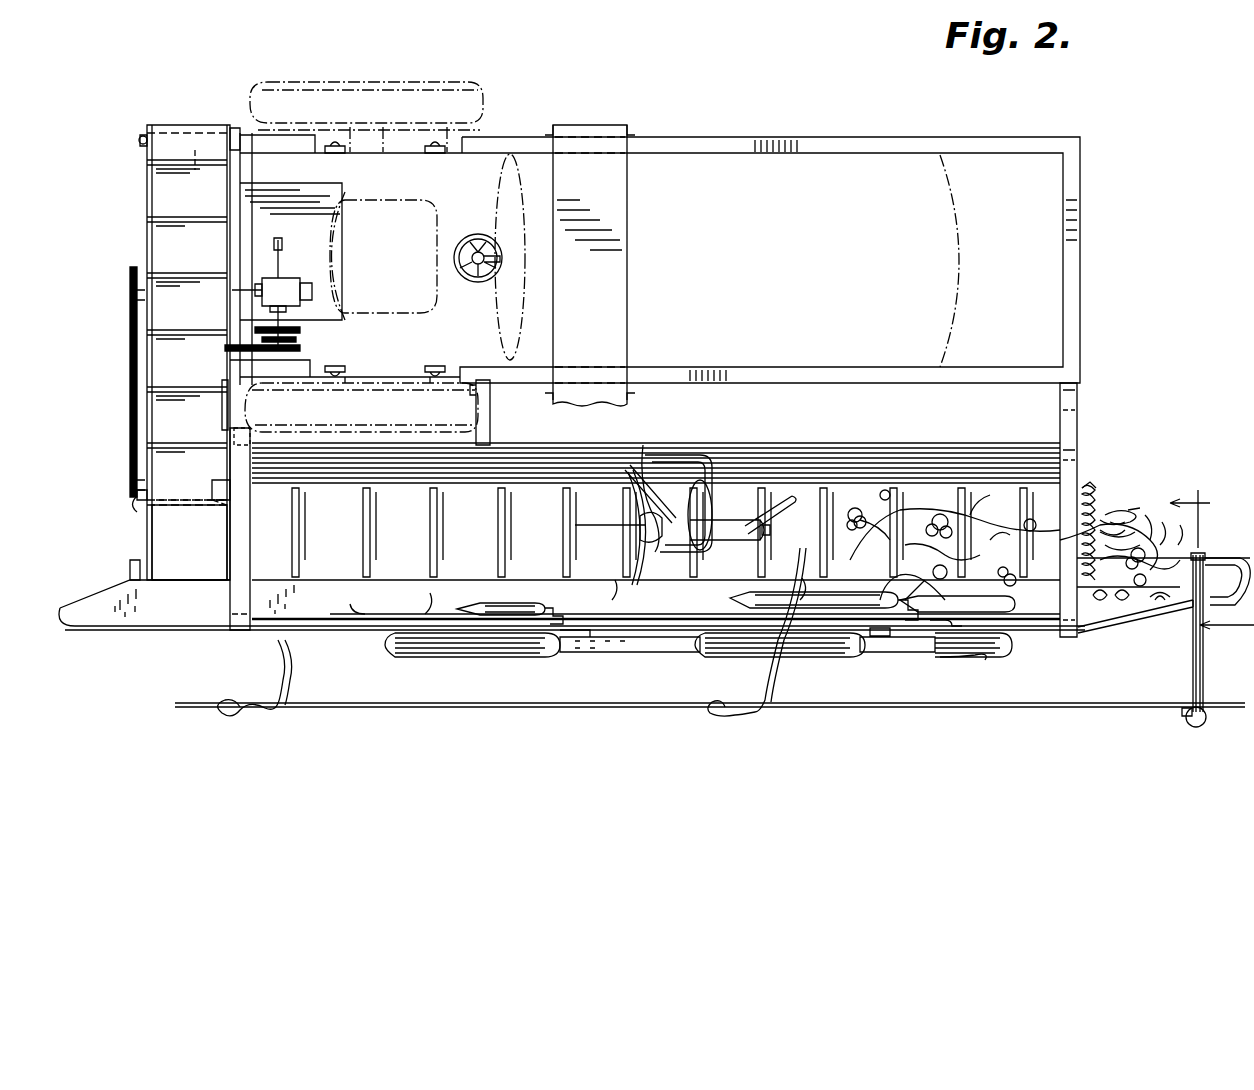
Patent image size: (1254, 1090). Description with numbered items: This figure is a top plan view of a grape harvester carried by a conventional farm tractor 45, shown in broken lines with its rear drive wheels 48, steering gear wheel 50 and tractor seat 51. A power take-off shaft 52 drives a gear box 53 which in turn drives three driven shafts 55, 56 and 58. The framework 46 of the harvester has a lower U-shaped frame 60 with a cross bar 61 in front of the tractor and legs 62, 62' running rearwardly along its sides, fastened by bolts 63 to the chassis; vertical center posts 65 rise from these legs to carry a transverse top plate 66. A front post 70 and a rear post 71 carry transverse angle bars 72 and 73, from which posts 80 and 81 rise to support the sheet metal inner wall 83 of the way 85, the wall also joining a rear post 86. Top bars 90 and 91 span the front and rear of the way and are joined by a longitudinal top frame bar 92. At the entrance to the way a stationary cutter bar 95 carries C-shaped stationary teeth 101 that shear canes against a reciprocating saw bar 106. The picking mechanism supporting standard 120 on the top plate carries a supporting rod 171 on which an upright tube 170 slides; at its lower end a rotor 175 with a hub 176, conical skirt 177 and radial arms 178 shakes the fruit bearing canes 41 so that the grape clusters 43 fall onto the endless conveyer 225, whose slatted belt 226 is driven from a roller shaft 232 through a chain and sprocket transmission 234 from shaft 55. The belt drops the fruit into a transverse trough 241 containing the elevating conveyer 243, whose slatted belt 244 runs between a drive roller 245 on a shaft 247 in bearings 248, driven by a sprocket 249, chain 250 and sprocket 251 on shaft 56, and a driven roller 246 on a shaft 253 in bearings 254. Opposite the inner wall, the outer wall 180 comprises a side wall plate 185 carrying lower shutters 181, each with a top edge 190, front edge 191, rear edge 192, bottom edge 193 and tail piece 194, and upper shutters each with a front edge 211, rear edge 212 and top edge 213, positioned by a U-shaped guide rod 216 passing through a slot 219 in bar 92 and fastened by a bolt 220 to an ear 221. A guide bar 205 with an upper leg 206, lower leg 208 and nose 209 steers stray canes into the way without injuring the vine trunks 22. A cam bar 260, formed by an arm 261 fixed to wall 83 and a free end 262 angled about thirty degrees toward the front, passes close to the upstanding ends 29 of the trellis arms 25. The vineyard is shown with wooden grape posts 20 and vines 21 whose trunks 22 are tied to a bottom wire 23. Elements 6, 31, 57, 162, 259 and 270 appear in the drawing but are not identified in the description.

The section line 6 is at (1212, 559).
The wooden grape posts 20 is at (1195, 728).
The vines 21 is at (262, 680).
The trunks 22 is at (228, 720).
The wire 23 is at (925, 711).
The arms of the grape trellis 25 is at (1182, 712).
The upstanding ends 29 is at (1198, 553).
The wheel 31 is at (1208, 733).
The fruit bearing canes 41 is at (1110, 520).
The clusters of grapes 43 is at (1136, 600).
The farm tractor 45 is at (966, 338).
The framework 46 is at (1090, 369).
The rear drive wheels 48 is at (437, 86).
The steering gear wheel 50 is at (478, 230).
The tractor seat 51 is at (430, 206).
The power take-off shaft 52 is at (310, 284).
The gear box 53 is at (263, 280).
The driven shaft 55 is at (282, 324).
The driven shaft 56 is at (250, 298).
The control box 57 is at (334, 192).
The driven shaft 58 is at (283, 252).
The lower horizontal U-shaped frame 60 is at (970, 142).
The cross bar 61 is at (1080, 228).
The horizontal leg or bar 62 is at (740, 354).
The horizontal leg or bar 62' is at (784, 127).
The bolts 63 is at (430, 152).
The vertical angle-iron center posts 65 is at (590, 132).
The horizontal transverse top plate 66 is at (620, 285).
The front angle iron post 70 is at (1080, 387).
The rear angle iron post 71 is at (490, 389).
The horizontal transverse angle iron bar 72 is at (1155, 520).
The horizontal transverse angle iron bar 73 is at (490, 410).
The post 80 is at (1078, 444).
The post 81 is at (490, 440).
The sheet metal inner wall 83 is at (918, 450).
The way 85 is at (550, 529).
The rear vertical post 86 is at (251, 437).
The transverse frame top bar 90 is at (1078, 425).
The transverse frame top bar 91 is at (250, 542).
The horizontal top frame bar 92 is at (308, 620).
The stationary cutter bar 95 is at (1093, 486).
The stationary teeth 101 is at (1120, 506).
The saw bar 106 is at (1090, 484).
The picking mechanism supporting standard 120 is at (744, 552).
The conveyor belt 162 is at (886, 598).
The upright tube 170 is at (740, 522).
The upright supporting rod 171 is at (766, 532).
The rotor 175 is at (618, 528).
The hub 176 is at (624, 484).
The conical skirt 177 is at (643, 448).
The radial arms 178 is at (640, 554).
The outer wall 180 is at (458, 683).
The lower shutters 181 is at (676, 675).
The side wall plate 185 is at (200, 610).
The top edge 190 is at (526, 660).
The front edge 191 is at (985, 646).
The rear edge 192 is at (392, 648).
The bottom edge 193 is at (808, 590).
The tail piece 194 is at (906, 600).
The guide bar 205 is at (1104, 640).
The upper leg 206 is at (1140, 630).
The lower leg 208 is at (1170, 598).
The nose 209 is at (1226, 581).
The front edge 211 is at (1056, 640).
The rear edge 212 is at (354, 599).
The top edge 213 is at (415, 599).
The U-shaped guide rod 216 is at (578, 640).
The slot 219 is at (962, 627).
The bolt 220 is at (526, 628).
The ear 221 is at (526, 605).
The endless conveyer 225 is at (870, 488).
The slatted endless conveyer belt 226 is at (940, 492).
The transverse shaft 232 is at (222, 420).
The chain and sprocket transmission 234 is at (312, 351).
The transverse trough 241 is at (147, 204).
The elevating conveyer 243 is at (171, 118).
The slatted endless belt 244 is at (155, 237).
The drive roller 245 is at (183, 496).
The driven roller 246 is at (195, 170).
The shaft 247 is at (135, 500).
The bearings 248 is at (137, 506).
The sprocket 249 is at (137, 486).
The chain 250 is at (130, 427).
The sprocket 251 is at (130, 320).
The shaft 253 is at (139, 142).
The bearings 254 is at (143, 136).
The cap 259 is at (236, 128).
The cam bar 260 is at (722, 446).
The arm 261 is at (706, 474).
The free end 262 is at (772, 518).
The tower 270 is at (182, 551).